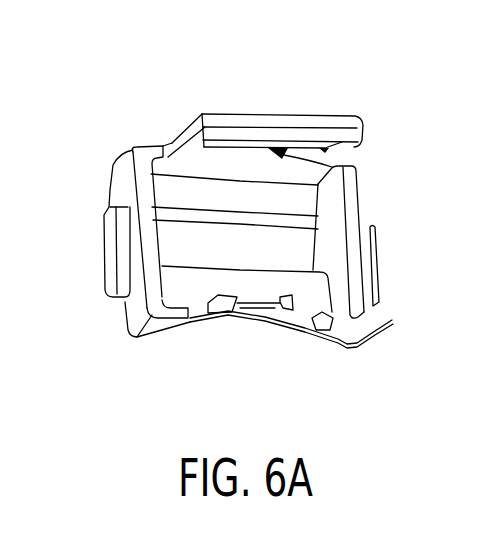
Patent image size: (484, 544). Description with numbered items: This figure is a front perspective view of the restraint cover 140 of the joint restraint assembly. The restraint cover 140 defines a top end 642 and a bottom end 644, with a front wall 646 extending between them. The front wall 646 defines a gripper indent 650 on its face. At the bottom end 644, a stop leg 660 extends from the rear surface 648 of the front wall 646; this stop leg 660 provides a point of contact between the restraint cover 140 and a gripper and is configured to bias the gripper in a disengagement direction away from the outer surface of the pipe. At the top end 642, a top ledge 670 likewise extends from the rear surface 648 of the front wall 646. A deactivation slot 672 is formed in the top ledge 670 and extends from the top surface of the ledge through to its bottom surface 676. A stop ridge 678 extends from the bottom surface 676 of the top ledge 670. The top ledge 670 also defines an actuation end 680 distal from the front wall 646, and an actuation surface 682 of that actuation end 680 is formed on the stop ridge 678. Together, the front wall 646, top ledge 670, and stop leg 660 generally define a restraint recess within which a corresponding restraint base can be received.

The restraint cover 140 is at (88, 117).
The top end 642 is at (115, 163).
The bottom end 644 is at (152, 328).
The front wall 646 is at (167, 282).
The rear surface 648 is at (160, 197).
The gripper indent 650 is at (163, 240).
The stop leg 660 is at (257, 310).
The top ledge 670 is at (172, 142).
The deactivation slot 672 is at (341, 156).
The bottom surface 676 is at (222, 167).
The stop ridge 678 is at (200, 128).
The actuation end 680 is at (286, 96).
The actuation surface 682 is at (237, 134).